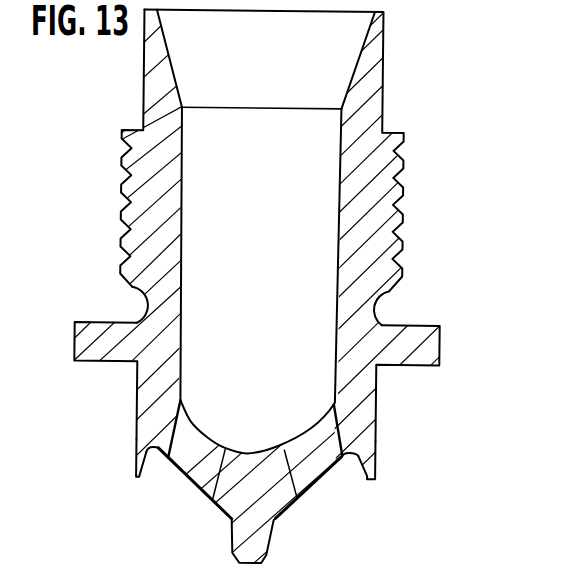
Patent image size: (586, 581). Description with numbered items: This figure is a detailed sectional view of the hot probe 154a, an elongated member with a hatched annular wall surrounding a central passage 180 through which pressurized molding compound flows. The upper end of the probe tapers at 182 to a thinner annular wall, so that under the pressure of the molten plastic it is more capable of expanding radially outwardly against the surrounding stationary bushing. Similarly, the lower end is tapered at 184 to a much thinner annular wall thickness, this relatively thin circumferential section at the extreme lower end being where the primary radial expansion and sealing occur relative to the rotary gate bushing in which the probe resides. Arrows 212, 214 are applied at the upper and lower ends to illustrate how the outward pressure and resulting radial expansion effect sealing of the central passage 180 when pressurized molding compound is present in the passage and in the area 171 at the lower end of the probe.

The central passage 180 is at (275, 312).
The tapered upper end 182 is at (387, 53).
The arrow 212 is at (352, 48).
The hot probe 154a is at (372, 310).
The tapered lower end 184 is at (137, 469).
The arrow 214 is at (146, 460).
The area 171 is at (331, 479).